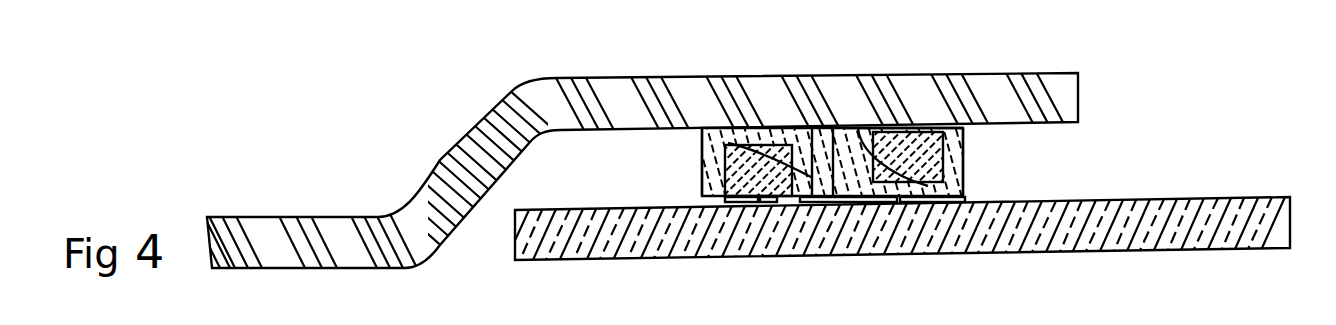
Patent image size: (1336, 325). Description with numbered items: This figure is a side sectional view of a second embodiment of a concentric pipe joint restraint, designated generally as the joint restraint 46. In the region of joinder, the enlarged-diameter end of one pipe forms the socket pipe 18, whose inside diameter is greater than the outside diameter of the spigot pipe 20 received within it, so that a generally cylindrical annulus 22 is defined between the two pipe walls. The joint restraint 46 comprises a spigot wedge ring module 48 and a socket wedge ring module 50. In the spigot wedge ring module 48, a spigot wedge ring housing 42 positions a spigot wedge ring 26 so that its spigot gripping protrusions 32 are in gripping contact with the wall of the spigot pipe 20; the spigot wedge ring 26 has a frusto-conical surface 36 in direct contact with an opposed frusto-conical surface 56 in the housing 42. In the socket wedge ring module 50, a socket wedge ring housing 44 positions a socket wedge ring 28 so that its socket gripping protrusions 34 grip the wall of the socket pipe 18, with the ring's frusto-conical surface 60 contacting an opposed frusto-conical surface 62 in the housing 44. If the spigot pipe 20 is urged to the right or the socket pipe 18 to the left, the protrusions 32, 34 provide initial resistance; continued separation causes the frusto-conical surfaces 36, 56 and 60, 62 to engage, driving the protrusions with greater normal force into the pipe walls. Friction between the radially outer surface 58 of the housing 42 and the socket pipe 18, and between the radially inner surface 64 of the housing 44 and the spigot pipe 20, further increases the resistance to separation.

The socket pipe 18 is at (632, 98).
The spigot pipe 20 is at (637, 240).
The annulus 22 is at (597, 173).
The spigot wedge ring 26 is at (743, 192).
The socket wedge ring 28 is at (930, 127).
The spigot gripping protrusions 32 is at (762, 200).
The socket gripping protrusions 34 is at (908, 127).
The frusto-conical surface 36 is at (773, 200).
The spigot wedge ring housing 42 is at (745, 100).
The socket wedge ring housing 44 is at (967, 115).
The joint restraint 46 is at (838, 160).
The spigot wedge ring module 48 is at (695, 146).
The socket wedge ring module 50 is at (975, 132).
The frusto-conical surface 56 is at (803, 203).
The radially outer surface 58 is at (795, 133).
The frusto-conical surface 60 is at (890, 127).
The frusto-conical surface 62 is at (858, 128).
The radially inner surface 64 is at (900, 200).